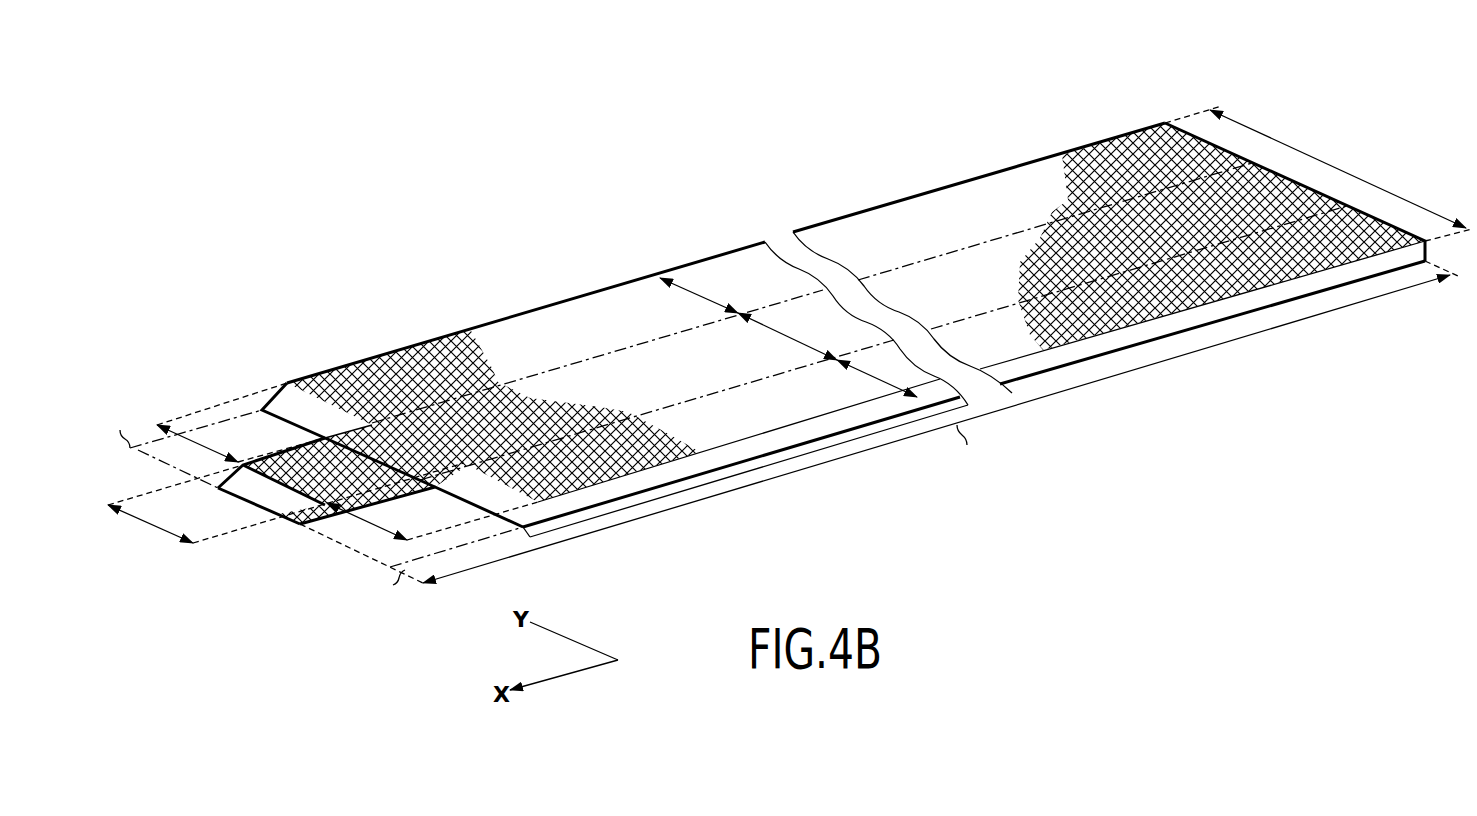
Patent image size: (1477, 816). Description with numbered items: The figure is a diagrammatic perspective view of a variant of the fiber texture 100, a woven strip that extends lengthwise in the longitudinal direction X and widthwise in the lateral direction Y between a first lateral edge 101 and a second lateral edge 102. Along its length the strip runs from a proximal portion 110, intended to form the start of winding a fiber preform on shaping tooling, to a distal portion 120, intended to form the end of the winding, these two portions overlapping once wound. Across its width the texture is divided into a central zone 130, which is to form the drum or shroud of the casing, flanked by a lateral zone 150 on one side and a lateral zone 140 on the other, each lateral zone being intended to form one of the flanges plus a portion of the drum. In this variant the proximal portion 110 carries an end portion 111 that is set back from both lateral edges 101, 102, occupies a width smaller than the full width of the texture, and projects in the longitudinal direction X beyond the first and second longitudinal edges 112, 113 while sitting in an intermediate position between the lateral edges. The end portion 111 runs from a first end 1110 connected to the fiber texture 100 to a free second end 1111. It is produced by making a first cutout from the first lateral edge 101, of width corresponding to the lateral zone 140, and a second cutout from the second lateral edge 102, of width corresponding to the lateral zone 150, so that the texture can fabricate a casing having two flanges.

The fiber texture 100 is at (514, 149).
The first lateral edge 101 is at (727, 465).
The second lateral edge 102 is at (480, 325).
The proximal portion 110 is at (307, 545).
The end portion 111 is at (300, 452).
The first end 1110 is at (440, 487).
The second end 1111 is at (297, 518).
The first longitudinal edge 112 is at (523, 530).
The second longitudinal edge 113 is at (290, 405).
The distal portion 120 is at (1150, 120).
The central zone 130 is at (883, 343).
The lateral zone 140 is at (981, 371).
The lateral zone 150 is at (812, 293).